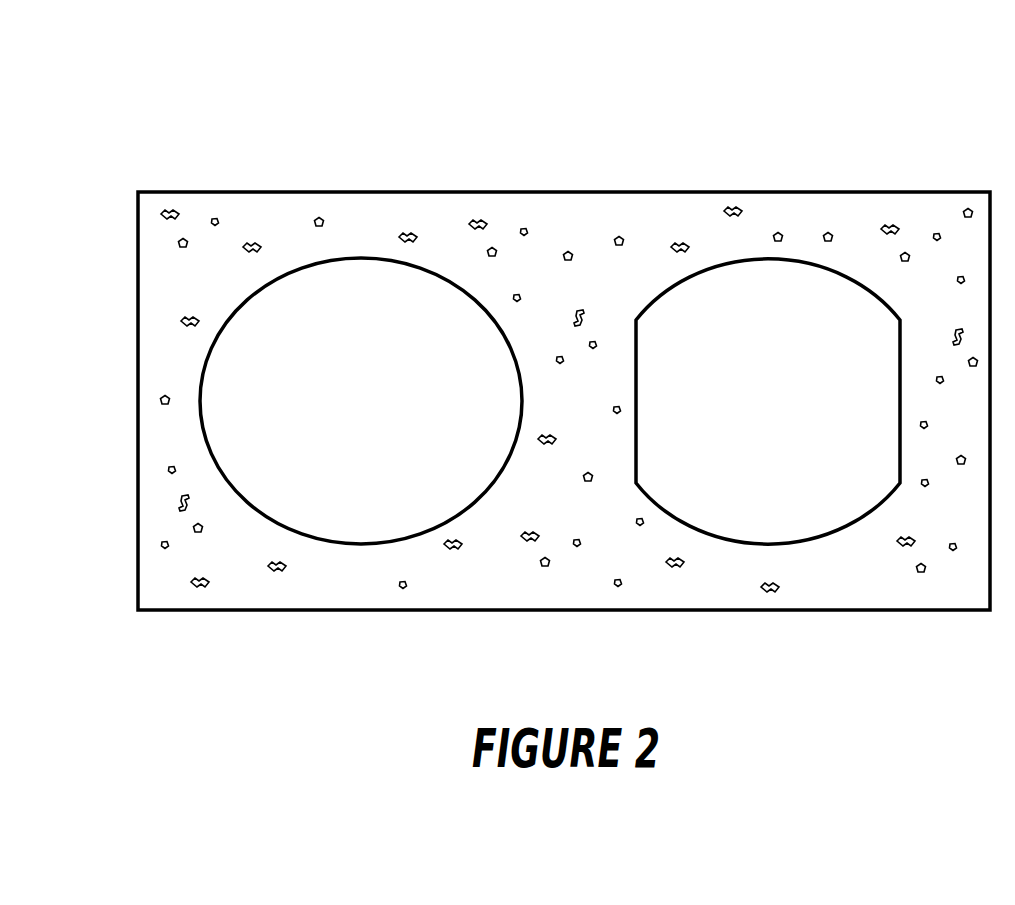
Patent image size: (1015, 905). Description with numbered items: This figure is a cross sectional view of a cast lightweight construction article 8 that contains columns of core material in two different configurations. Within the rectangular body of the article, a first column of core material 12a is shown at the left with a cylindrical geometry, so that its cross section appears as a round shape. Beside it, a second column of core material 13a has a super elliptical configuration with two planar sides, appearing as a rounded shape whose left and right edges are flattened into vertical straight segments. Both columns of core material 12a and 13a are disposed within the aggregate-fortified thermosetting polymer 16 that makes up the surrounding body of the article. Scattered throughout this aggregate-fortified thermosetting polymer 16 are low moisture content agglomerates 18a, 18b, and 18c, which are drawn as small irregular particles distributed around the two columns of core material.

The cast lightweight construction article 8 is at (916, 80).
The aggregate-fortified thermosetting polymer 16 is at (580, 218).
The low moisture content agglomerate 18a is at (167, 210).
The low moisture content agglomerate 18b is at (215, 218).
The low moisture content agglomerate 18c is at (178, 245).
The first column of core material 12a is at (358, 561).
The second column of core material 13a is at (748, 561).